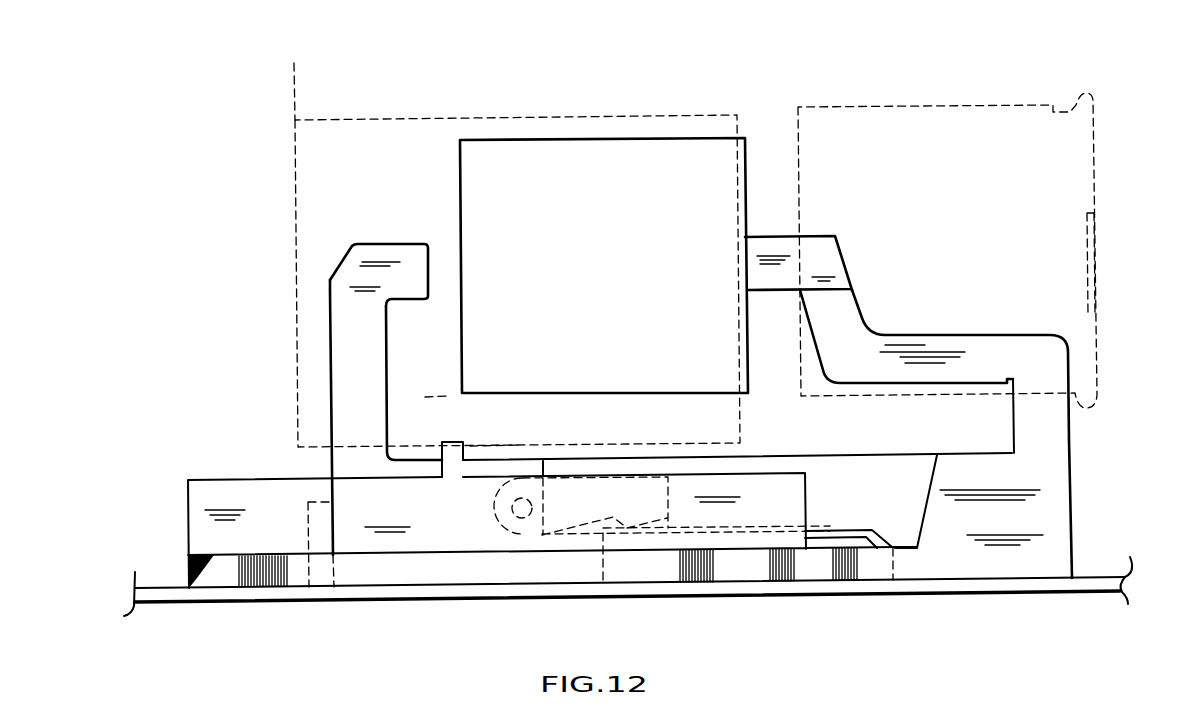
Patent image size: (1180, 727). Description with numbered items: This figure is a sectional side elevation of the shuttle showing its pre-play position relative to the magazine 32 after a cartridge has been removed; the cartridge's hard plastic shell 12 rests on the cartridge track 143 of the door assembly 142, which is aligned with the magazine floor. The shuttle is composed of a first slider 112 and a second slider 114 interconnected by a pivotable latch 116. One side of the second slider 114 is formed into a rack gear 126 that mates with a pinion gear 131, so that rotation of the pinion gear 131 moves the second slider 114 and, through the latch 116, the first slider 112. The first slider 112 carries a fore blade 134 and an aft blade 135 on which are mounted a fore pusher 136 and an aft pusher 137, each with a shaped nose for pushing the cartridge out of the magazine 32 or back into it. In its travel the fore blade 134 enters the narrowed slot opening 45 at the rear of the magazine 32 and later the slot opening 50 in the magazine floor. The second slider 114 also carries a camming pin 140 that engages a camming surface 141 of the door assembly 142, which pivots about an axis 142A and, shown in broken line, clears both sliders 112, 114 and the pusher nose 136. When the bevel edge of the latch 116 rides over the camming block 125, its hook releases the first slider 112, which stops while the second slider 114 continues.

The hard plastic shell 12 is at (553, 140).
The cartridge magazine 32 is at (938, 103).
The narrowed slot opening 45 is at (1098, 243).
The slot opening 50 is at (1033, 393).
The first slider 112 is at (953, 463).
The second slider 114 is at (268, 497).
The pivotable latch 116 is at (592, 497).
The camming block 125 is at (833, 527).
The rack gear 126 is at (500, 573).
The pinion gear 131 is at (815, 570).
The fore blade 134 is at (1062, 441).
The aft blade 135 is at (345, 361).
The fore pusher 136 is at (773, 248).
The aft pusher 137 is at (358, 267).
The camming pin 140 is at (453, 443).
The camming surface 141 is at (485, 447).
The door assembly 142 is at (294, 190).
The pivot axis 142A is at (293, 88).
The cartridge track 143 is at (445, 397).